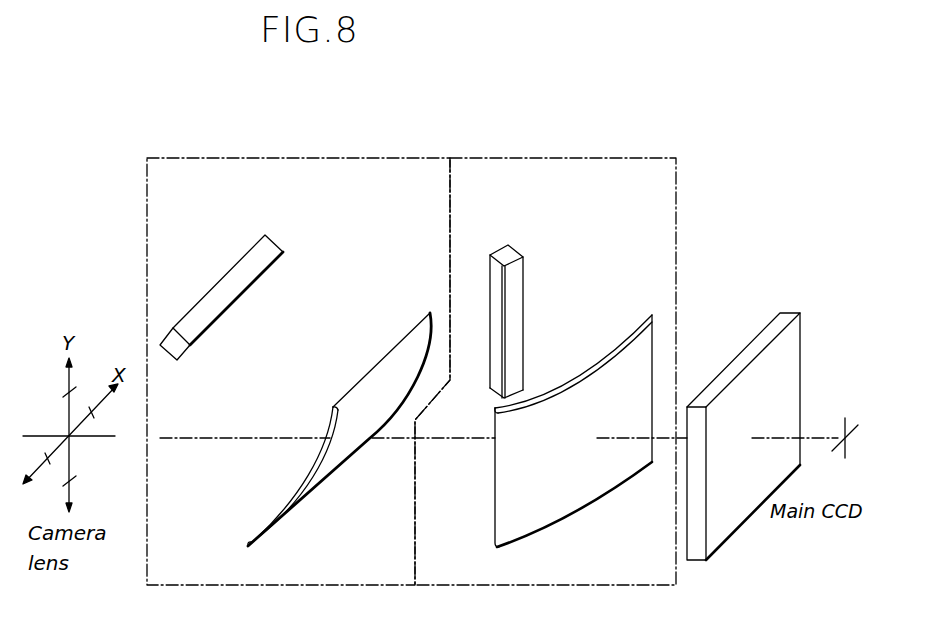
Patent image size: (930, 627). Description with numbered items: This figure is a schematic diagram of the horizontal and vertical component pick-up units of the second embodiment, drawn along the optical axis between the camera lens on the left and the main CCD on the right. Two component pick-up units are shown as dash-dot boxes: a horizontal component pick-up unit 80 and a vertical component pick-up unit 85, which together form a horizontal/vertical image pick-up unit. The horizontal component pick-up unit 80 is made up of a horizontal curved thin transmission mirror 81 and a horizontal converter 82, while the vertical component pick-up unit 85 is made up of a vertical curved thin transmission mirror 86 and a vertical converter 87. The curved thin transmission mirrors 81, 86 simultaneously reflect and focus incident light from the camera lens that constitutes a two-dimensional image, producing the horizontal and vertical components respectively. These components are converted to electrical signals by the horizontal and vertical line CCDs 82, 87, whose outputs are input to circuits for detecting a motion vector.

The horizontal component pick-up unit 80 is at (332, 158).
The horizontal curved thin transmission mirror 81 is at (268, 522).
The horizontal converter 82 is at (275, 250).
The vertical component pick-up unit 85 is at (573, 158).
The vertical curved thin transmission mirror 86 is at (580, 513).
The vertical converter 87 is at (525, 280).